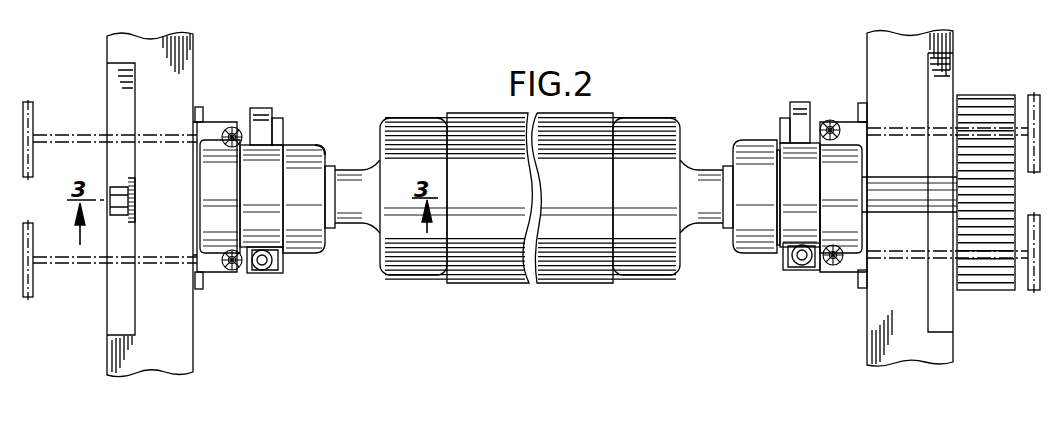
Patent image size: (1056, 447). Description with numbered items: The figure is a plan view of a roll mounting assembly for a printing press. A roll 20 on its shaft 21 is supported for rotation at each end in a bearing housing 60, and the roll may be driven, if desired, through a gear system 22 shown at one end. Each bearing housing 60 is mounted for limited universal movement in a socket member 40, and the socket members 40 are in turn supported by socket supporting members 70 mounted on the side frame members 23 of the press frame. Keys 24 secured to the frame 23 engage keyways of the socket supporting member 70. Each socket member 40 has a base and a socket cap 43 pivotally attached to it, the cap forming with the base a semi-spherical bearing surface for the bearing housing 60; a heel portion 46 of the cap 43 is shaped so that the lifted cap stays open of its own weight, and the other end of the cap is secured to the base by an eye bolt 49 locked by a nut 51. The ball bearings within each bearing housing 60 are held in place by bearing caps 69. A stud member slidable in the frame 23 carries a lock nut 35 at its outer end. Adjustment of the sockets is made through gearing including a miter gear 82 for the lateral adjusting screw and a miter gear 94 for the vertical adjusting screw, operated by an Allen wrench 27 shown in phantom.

The roll 20 is at (513, 283).
The shaft 21 is at (881, 177).
The gear system 22 is at (979, 95).
The side frame member 23 is at (196, 350).
The key 24 is at (200, 107).
The Allen wrench 27 is at (48, 134).
The lock nut 35 is at (118, 187).
The socket member 40 is at (277, 118).
The socket cap 43 is at (268, 196).
The heel portion 46 is at (262, 107).
The eye bolt 49 is at (262, 271).
The nut 51 is at (258, 272).
The bearing housing 60 is at (302, 145).
The bearing cap 69 is at (322, 145).
The socket supporting member 70 is at (196, 268).
The miter gear 82 is at (232, 271).
The miter gear 94 is at (231, 127).